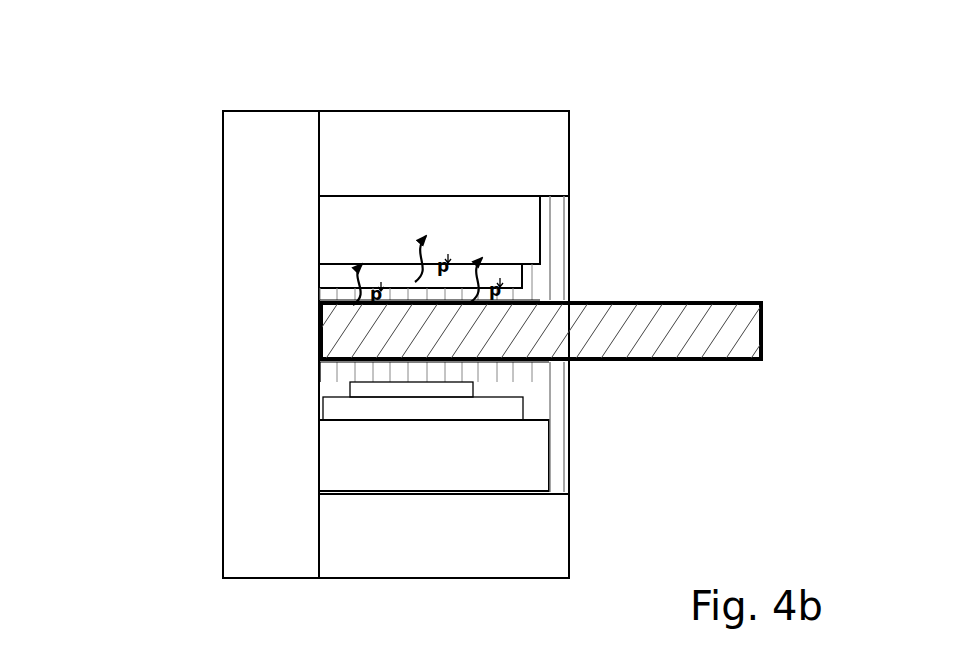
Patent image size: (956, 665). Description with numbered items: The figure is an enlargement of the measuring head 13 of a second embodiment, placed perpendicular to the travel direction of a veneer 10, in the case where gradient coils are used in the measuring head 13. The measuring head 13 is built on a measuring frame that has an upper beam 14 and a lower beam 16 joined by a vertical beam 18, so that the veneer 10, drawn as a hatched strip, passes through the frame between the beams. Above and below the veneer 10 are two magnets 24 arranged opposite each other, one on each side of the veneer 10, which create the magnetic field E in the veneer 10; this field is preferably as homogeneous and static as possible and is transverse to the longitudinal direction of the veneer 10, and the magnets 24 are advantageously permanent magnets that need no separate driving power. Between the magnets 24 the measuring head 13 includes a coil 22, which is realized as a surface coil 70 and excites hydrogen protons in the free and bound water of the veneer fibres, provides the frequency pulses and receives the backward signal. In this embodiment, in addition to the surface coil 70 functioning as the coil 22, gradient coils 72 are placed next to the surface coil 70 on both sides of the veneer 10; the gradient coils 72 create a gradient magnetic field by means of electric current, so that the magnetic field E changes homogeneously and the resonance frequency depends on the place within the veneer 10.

The measuring head 13 is at (372, 80).
The upper beam 14 is at (504, 153).
The lower beam 16 is at (491, 554).
The vertical beam 18 is at (255, 238).
The coil 22 is at (328, 389).
The magnets 24 is at (490, 232).
The surface coil 70 is at (474, 384).
The gradient coils 72 is at (512, 281).
The veneer 10 is at (734, 334).
The magnetic field E is at (550, 283).